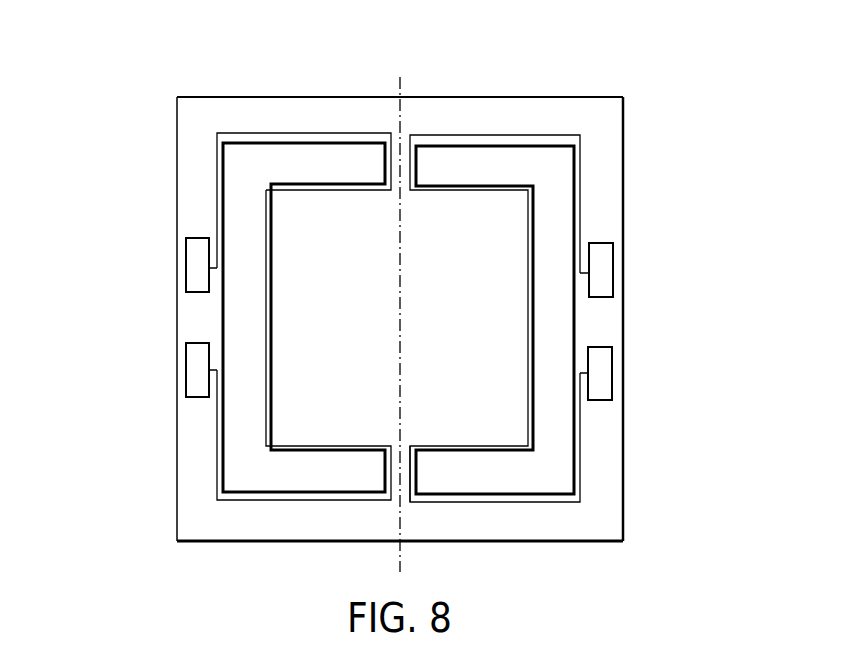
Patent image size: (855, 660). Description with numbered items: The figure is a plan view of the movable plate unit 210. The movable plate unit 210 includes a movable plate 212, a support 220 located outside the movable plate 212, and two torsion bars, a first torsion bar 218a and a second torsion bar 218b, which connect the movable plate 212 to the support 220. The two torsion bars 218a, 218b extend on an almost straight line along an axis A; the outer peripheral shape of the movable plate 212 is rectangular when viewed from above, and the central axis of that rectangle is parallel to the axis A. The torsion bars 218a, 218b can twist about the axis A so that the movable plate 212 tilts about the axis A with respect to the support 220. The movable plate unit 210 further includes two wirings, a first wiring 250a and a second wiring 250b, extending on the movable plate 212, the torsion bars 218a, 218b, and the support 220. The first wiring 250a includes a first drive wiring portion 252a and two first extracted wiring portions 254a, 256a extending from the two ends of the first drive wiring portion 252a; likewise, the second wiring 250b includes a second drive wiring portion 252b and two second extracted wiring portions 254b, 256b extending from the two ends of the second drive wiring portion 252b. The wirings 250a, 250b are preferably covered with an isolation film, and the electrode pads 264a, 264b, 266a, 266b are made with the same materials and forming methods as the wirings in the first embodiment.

The movable plate unit 210 is at (150, 91).
The support 220 is at (230, 113).
The movable plate 212 is at (327, 210).
The first torsion bar 218a is at (387, 162).
The second torsion bar 218b is at (417, 478).
The first wiring 250a is at (100, 272).
The second wiring 250b is at (712, 252).
The first drive wiring portion 252a is at (268, 292).
The second drive wiring portion 252b is at (530, 300).
The first extracted wiring portion 254a is at (218, 183).
The second extracted wiring portion 254b is at (583, 170).
The first extracted wiring portion 256a is at (215, 453).
The second extracted wiring portion 256b is at (578, 473).
The electrode pad 264a is at (200, 280).
The electrode pad 264b is at (598, 285).
The electrode pad 266a is at (200, 357).
The electrode pad 266b is at (598, 360).
The axis A is at (403, 90).